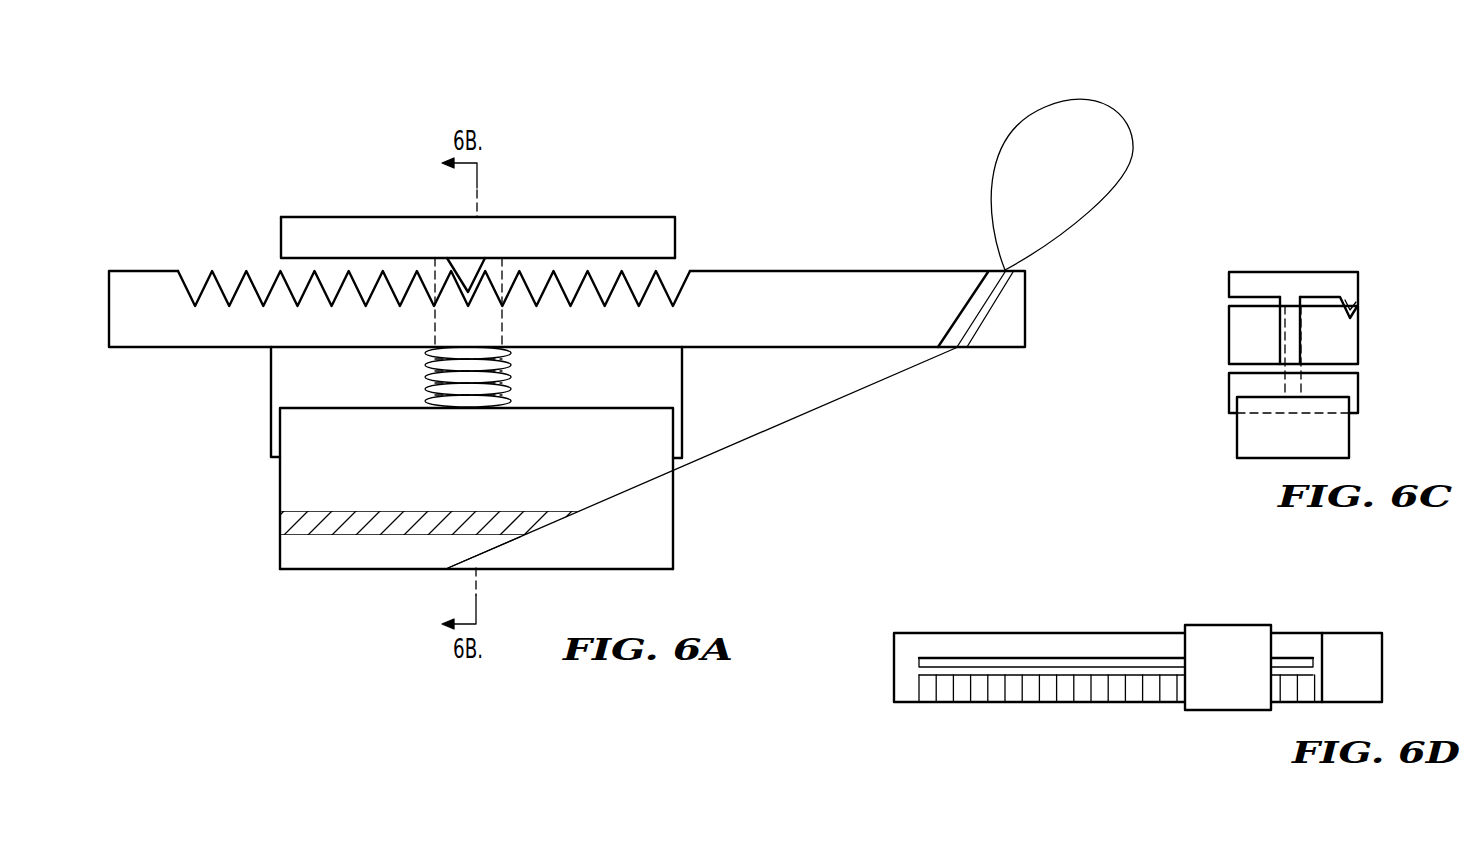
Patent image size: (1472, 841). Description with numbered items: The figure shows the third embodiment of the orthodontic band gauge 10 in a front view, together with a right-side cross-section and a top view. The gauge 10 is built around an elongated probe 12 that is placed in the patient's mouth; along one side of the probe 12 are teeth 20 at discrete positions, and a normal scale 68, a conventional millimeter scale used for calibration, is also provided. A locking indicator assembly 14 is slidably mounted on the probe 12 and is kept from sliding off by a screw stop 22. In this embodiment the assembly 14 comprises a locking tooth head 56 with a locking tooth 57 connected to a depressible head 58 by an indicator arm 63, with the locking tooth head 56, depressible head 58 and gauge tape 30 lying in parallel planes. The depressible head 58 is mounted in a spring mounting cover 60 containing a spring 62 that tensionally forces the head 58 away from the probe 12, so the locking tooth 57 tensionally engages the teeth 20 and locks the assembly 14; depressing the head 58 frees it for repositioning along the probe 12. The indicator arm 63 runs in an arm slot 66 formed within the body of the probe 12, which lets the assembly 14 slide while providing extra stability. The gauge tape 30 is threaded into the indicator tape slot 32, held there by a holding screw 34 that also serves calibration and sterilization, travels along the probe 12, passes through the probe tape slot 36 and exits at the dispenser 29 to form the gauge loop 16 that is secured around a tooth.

In FIG. 6A, the gauge 10 is at (540, 190).
In FIG. 6A, the probe 12 is at (843, 280).
In FIG. 6C, the probe 12 is at (1229, 332).
In FIG. 6A, the locking indicator assembly 14 is at (343, 215).
In FIG. 6D, the locking indicator assembly 14 is at (1230, 635).
In FIG. 6A, the gauge loop 16 is at (1128, 122).
In FIG. 6A, the teeth 20 is at (208, 276).
In FIG. 6D, the teeth 20 is at (993, 703).
In FIG. 6D, the screw stop 22 is at (1353, 640).
In FIG. 6A, the dispenser 29 is at (1003, 270).
In FIG. 6A, the gauge tape 30 is at (818, 405).
In FIG. 6A, the indicator tape slot 32 is at (543, 522).
In FIG. 6A, the holding screw 34 is at (283, 520).
In FIG. 6A, the probe tape slot 36 is at (965, 352).
In FIG. 6A, the locking tooth head 56 is at (620, 215).
In FIG. 6C, the locking tooth head 56 is at (1237, 390).
In FIG. 6A, the locking tooth 57 is at (467, 274).
In FIG. 6A, the depressible head 58 is at (326, 560).
In FIG. 6C, the depressible head 58 is at (1247, 437).
In FIG. 6A, the spring mounting cover 60 is at (271, 392).
In FIG. 6C, the spring mounting cover 60 is at (1255, 272).
In FIG. 6A, the spring 62 is at (288, 463).
In FIG. 6A, the indicator arm 63 is at (502, 328).
In FIG. 6C, the arm slot 66 is at (1305, 334).
In FIG. 6D, the normal scale 68 is at (957, 663).